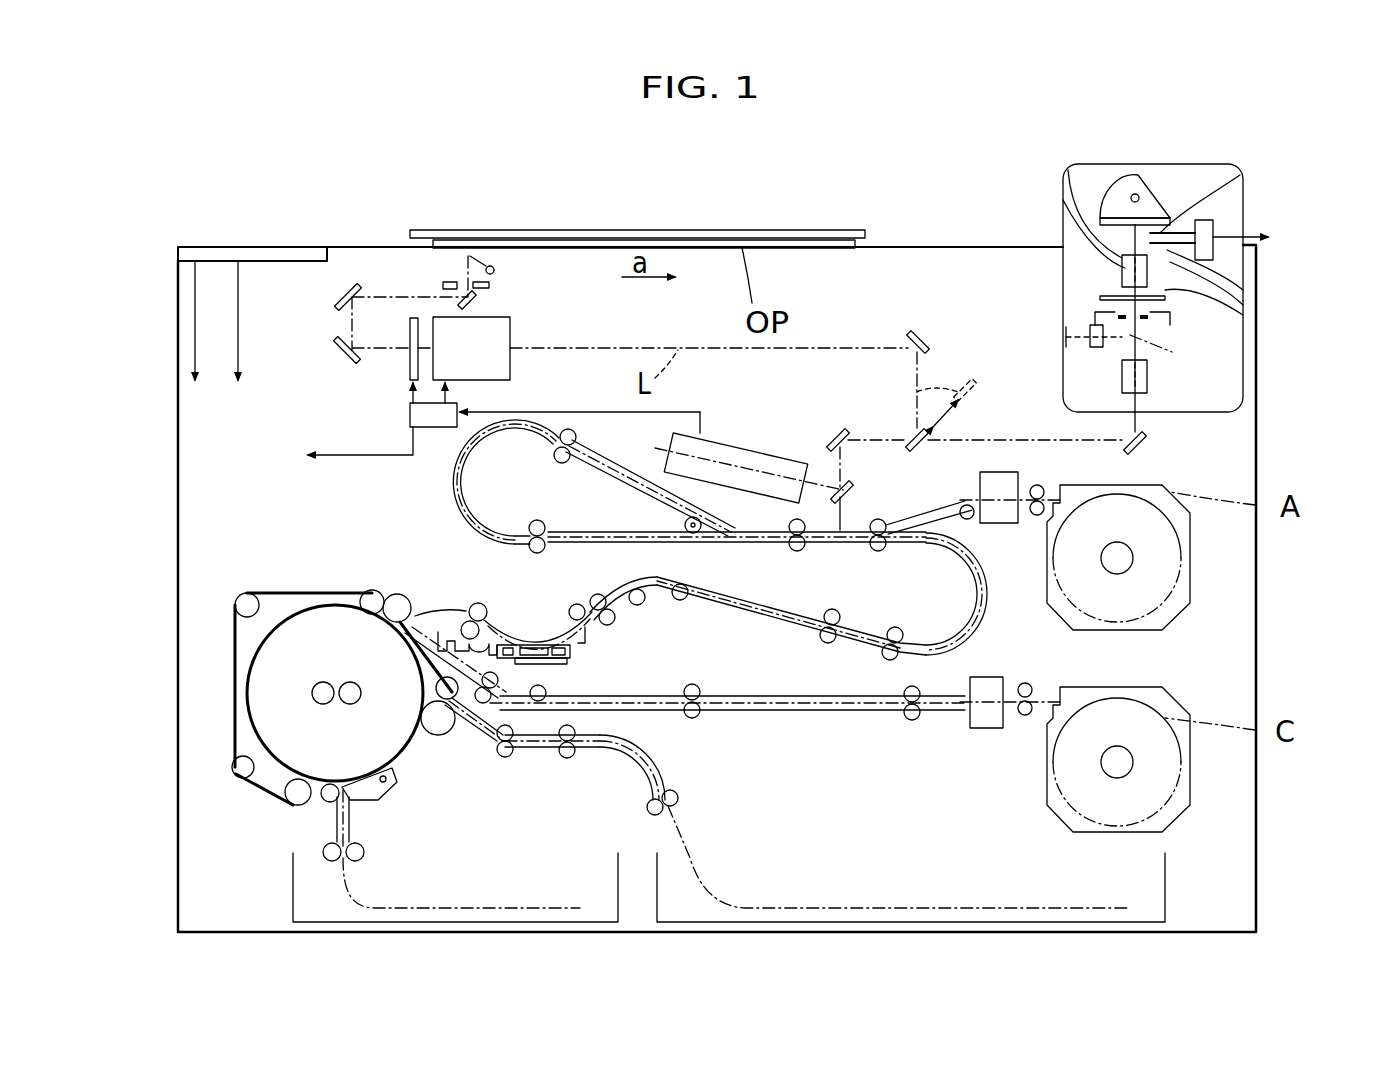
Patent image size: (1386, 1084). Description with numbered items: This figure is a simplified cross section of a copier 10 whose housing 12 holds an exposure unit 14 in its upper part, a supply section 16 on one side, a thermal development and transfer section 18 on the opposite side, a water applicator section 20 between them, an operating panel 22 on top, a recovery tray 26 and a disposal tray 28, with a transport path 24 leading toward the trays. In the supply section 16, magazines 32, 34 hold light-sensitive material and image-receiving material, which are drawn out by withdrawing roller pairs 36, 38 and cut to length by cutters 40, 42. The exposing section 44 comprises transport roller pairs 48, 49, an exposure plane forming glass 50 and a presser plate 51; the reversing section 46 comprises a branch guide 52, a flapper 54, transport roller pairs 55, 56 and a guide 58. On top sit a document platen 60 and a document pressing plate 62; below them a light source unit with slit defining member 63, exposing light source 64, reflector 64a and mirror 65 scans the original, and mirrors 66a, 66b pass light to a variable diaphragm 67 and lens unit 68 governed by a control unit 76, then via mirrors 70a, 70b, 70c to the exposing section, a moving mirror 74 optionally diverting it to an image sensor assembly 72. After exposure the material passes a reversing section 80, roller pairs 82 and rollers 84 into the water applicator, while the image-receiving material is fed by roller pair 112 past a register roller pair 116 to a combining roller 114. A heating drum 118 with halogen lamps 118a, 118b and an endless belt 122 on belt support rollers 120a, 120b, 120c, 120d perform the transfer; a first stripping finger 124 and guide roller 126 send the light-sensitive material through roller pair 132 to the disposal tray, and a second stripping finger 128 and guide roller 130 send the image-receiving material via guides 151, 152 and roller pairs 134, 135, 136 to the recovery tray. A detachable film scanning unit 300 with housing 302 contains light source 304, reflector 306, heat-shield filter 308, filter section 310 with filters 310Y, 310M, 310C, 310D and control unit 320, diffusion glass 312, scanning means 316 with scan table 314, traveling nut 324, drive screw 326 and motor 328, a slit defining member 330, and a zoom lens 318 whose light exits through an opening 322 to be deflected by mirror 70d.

The copier 10 is at (448, 212).
The housing 12 is at (1258, 452).
The exposure unit 14 is at (660, 312).
The supply section 16 is at (1212, 660).
The thermal development and transfer section 18 is at (298, 562).
The water applicator section 20 is at (530, 622).
The operating panel 22 is at (232, 247).
The paper discharge path 24 is at (657, 755).
The image-receiving material recovery tray 26 is at (818, 865).
The disposal tray 28 is at (545, 895).
The magazine 32 is at (1192, 556).
The magazine 34 is at (1192, 768).
The withdrawing roller pair 36 is at (1032, 524).
The withdrawing roller pair 38 is at (1024, 718).
The cutter 40 is at (996, 528).
The cutter 42 is at (985, 730).
The exposing section 44 is at (855, 555).
The reversing section 46 is at (448, 462).
The transport roller pair 48 is at (885, 552).
The transport roller pair 49 is at (795, 550).
The exposure plane forming glass 50 is at (838, 530).
The presser plate 51 is at (826, 550).
The branch guide 52 is at (735, 548).
The flapper 54 is at (688, 522).
The transport roller pair 55 is at (566, 465).
The transport roller pair 56 is at (532, 552).
The guide 58 is at (468, 480).
The document platen 60 is at (842, 250).
The document pressing plate 62 is at (745, 232).
The slit defining member 63 is at (441, 285).
The exposing light source 64 is at (496, 272).
The reflector 64a is at (490, 290).
The mirror 65 is at (475, 305).
The mirror 66a is at (338, 294).
The mirror 66b is at (338, 350).
The variable diaphragm 67 is at (408, 365).
The lens unit 68 is at (512, 357).
The mirror 70a is at (927, 335).
The mirror 70b is at (914, 432).
The mirror 70c is at (838, 432).
The mirror 70d is at (1146, 449).
The image sensor assembly 72 is at (740, 447).
The moving mirror 74 is at (848, 490).
The control unit 76 is at (410, 417).
The reversing section 80 is at (1000, 632).
The roller pairs 82 is at (825, 640).
The rollers 84 is at (640, 603).
The roller pair 112 is at (692, 684).
The combining roller 114 is at (399, 593).
The register roller pair 116 is at (503, 686).
The heating drum 118 is at (256, 706).
The halogen lamp 118a is at (315, 689).
The halogen lamp 118b is at (350, 705).
The belt support roller 120a is at (371, 589).
The belt support roller 120b is at (243, 592).
The belt support roller 120c is at (232, 786).
The belt support roller 120d is at (290, 804).
The endless belt 122 is at (238, 656).
The first stripping finger 124 is at (382, 801).
The guide roller 126 is at (328, 804).
The second stripping finger 128 is at (418, 688).
The guide roller 130 is at (438, 737).
The roller pair 132 is at (326, 864).
The roller pair 134 is at (500, 756).
The roller pair 135 is at (578, 731).
The roller pair 136 is at (678, 801).
The guide 151 is at (552, 758).
The guide 152 is at (662, 766).
The film scanning unit 300 is at (793, 255).
The housing 302 is at (1243, 242).
The light source 304 is at (1140, 194).
The reflector 306 is at (1150, 212).
The heat-shield filter 308 is at (1166, 216).
The filter section 310 is at (1234, 228).
The magenta filter 310M is at (1068, 172).
The yellow filter 310Y is at (1232, 175).
The cyan filter 310C is at (1200, 262).
The ND filter 310D is at (1202, 278).
The diffusion glass 312 is at (1110, 240).
The scan table 314 is at (1185, 292).
The scanning means 316 is at (1118, 270).
The zoom lens 318 is at (1122, 377).
The control unit 320 is at (1213, 246).
The opening 322 is at (1125, 418).
The traveling nut 324 is at (1083, 307).
The drive screw 326 is at (1090, 338).
The motor 328 is at (1092, 330).
The slit defining member 330 is at (1296, 394).